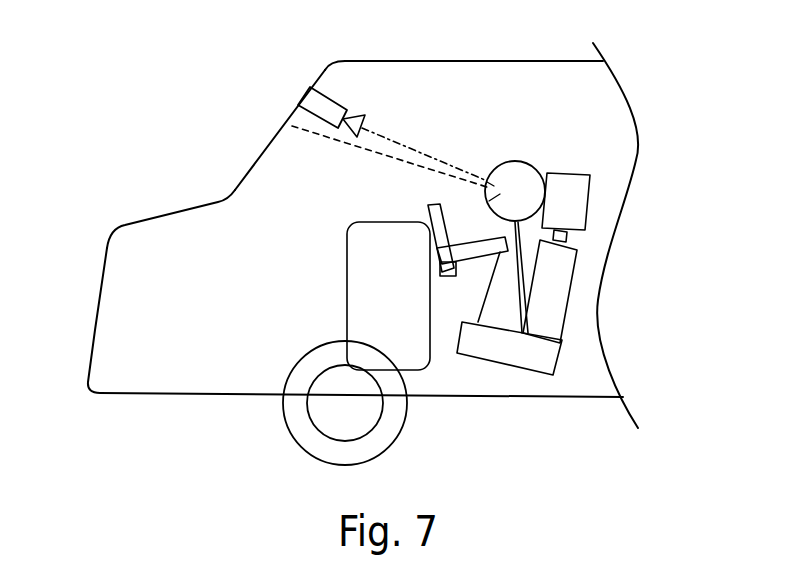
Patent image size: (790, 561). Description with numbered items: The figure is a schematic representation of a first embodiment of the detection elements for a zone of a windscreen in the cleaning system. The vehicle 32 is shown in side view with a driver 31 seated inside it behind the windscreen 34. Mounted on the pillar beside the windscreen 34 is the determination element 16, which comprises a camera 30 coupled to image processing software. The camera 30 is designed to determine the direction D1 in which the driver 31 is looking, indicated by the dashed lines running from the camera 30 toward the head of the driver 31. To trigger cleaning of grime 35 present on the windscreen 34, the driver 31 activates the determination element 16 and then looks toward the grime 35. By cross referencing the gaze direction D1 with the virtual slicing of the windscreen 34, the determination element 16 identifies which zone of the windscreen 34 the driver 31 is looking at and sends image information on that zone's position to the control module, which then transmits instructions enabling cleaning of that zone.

The determination element 16 is at (338, 88).
The camera 30 is at (323, 100).
The driver 31 is at (530, 182).
The vehicle 32 is at (339, 235).
The windscreen 34 is at (216, 150).
The grime 35 is at (284, 127).
The direction D1 is at (372, 145).